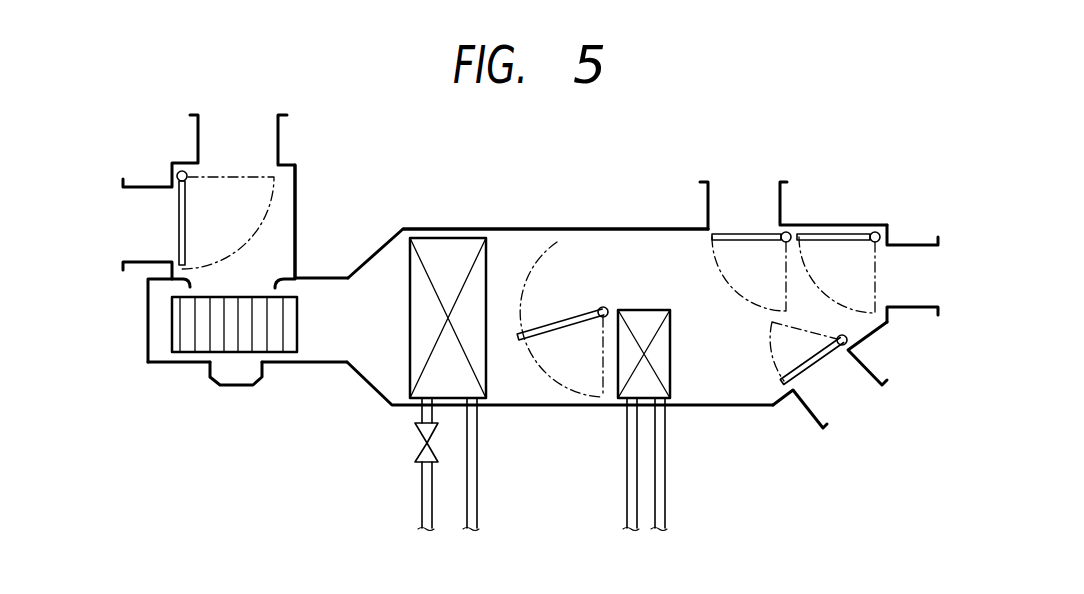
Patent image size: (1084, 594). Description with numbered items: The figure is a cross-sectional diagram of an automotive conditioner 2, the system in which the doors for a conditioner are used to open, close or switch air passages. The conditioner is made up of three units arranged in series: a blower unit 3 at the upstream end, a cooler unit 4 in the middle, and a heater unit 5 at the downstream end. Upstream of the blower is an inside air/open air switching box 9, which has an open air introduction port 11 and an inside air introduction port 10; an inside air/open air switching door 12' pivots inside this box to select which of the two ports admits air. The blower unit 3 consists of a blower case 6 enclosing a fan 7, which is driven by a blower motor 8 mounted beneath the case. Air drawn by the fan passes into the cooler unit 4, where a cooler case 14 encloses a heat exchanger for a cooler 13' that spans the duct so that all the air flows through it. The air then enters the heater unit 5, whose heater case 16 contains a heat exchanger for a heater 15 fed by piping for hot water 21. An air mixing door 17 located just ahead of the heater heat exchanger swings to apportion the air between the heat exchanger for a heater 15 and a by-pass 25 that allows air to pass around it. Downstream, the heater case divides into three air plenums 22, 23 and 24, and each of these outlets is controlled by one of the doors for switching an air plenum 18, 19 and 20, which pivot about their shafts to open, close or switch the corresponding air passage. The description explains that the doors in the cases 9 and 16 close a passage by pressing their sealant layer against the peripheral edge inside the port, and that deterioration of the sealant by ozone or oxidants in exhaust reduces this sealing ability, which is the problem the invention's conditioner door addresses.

The automotive conditioner 2 is at (555, 338).
The blower unit 3 is at (220, 362).
The cooler unit 4 is at (528, 340).
The heater unit 5 is at (819, 332).
The blower case 6 is at (147, 329).
The fan 7 is at (298, 330).
The blower motor 8 is at (236, 387).
The inside air/open air switching box 9 is at (296, 196).
The inside air introduction port 10 is at (246, 133).
The open air introduction port 11 is at (147, 230).
The inside air/open air switching door 12' is at (181, 220).
The heat exchanger for a cooler 13' is at (445, 354).
The cooler case 14 is at (368, 388).
The heat exchanger for a heater 15 is at (668, 368).
The heater case 16 is at (631, 228).
The air mixing door 17 is at (545, 333).
The door for switching an air plenum 18 is at (750, 237).
The door for switching an air plenum 19 is at (842, 237).
The door for switching an air plenum 20 is at (806, 390).
The piping for hot water 21 is at (625, 468).
The air plenum 22 is at (753, 191).
The air plenum 23 is at (926, 291).
The air plenum 24 is at (854, 413).
The by-pass 25 is at (655, 278).